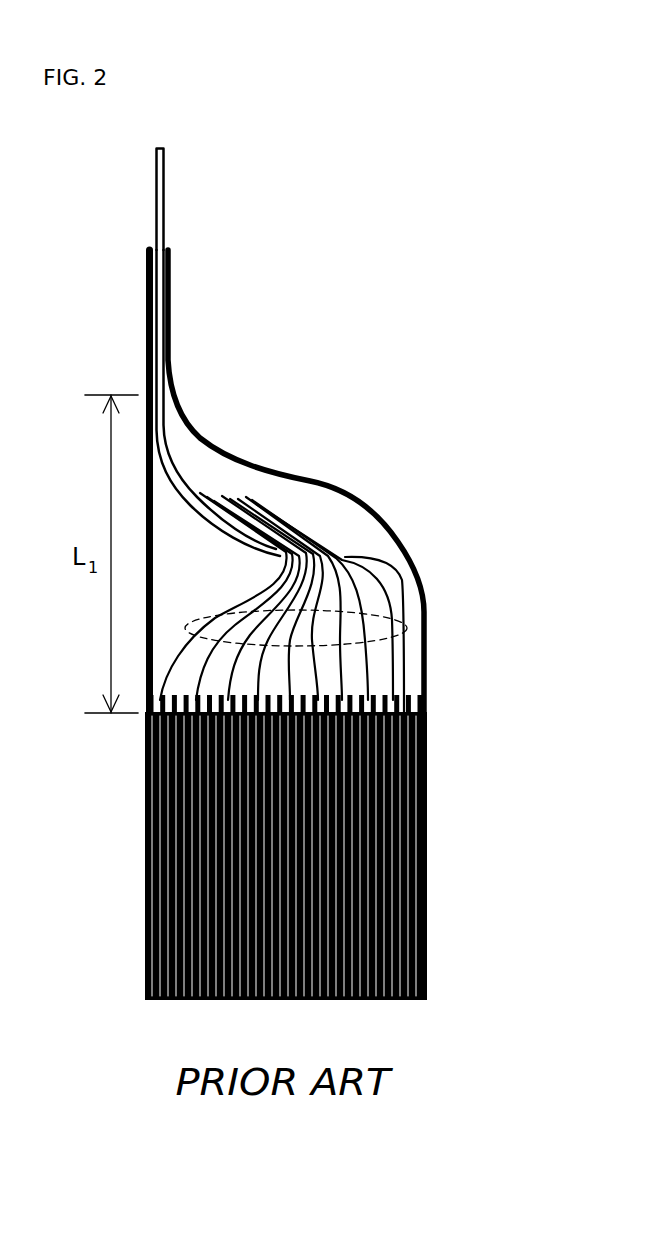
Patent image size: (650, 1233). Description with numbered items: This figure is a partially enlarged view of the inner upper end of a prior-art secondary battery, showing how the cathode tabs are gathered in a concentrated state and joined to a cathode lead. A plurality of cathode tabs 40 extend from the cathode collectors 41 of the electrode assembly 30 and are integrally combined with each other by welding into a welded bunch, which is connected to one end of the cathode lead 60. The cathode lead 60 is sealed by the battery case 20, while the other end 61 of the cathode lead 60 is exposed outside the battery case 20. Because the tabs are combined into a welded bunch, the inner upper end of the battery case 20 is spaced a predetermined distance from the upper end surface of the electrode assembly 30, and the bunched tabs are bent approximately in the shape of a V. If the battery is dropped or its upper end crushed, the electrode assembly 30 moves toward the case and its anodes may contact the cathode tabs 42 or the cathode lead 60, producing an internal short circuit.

The battery case 20 is at (327, 482).
The electrode assembly 30 is at (423, 1004).
The cathode tabs 40 is at (407, 625).
The cathode collectors 41 is at (147, 766).
The cathode tabs 42 is at (407, 666).
The cathode lead 60 is at (165, 403).
The other end of the cathode lead 61 is at (165, 208).